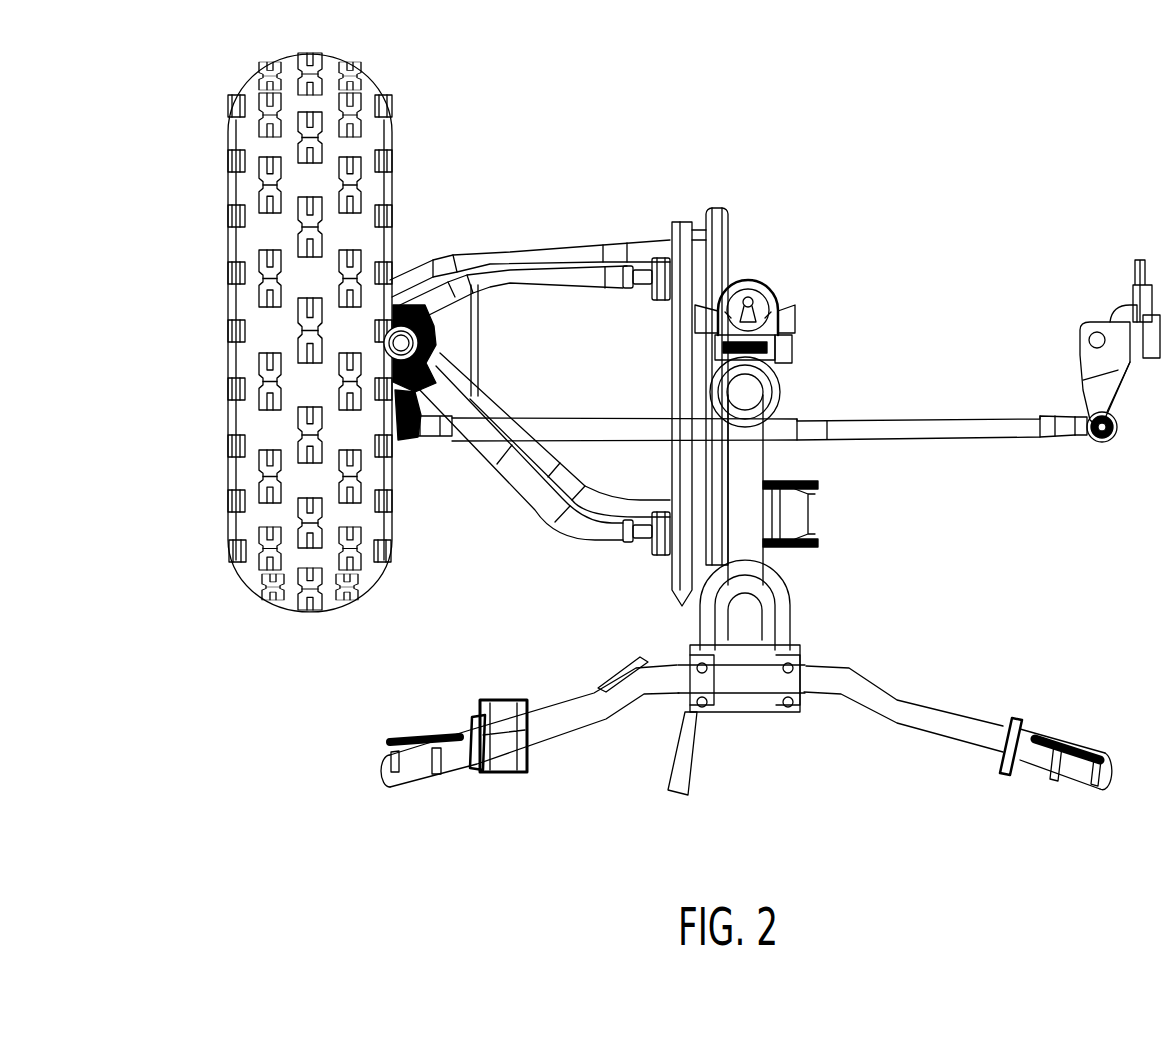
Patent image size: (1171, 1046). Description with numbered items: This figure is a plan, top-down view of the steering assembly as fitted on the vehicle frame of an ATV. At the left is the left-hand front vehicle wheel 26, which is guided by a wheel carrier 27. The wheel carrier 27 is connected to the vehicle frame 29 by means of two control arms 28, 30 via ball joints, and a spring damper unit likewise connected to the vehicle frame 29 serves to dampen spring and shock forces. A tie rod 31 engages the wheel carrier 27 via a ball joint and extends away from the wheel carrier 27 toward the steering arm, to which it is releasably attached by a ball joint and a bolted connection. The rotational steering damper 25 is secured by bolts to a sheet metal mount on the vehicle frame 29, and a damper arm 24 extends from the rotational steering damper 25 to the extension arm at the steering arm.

The damper arm 24 is at (792, 352).
The rotational steering damper 25 is at (765, 278).
The left-hand front vehicle wheel 26 is at (230, 456).
The wheel carrier 27 is at (413, 440).
The control arm 28 is at (563, 268).
The vehicle frame 29 is at (672, 600).
The control arm 30 is at (553, 470).
The tie rod 31 is at (608, 416).